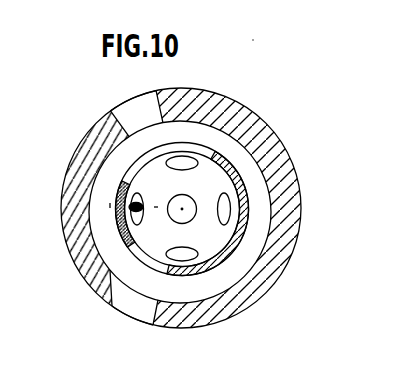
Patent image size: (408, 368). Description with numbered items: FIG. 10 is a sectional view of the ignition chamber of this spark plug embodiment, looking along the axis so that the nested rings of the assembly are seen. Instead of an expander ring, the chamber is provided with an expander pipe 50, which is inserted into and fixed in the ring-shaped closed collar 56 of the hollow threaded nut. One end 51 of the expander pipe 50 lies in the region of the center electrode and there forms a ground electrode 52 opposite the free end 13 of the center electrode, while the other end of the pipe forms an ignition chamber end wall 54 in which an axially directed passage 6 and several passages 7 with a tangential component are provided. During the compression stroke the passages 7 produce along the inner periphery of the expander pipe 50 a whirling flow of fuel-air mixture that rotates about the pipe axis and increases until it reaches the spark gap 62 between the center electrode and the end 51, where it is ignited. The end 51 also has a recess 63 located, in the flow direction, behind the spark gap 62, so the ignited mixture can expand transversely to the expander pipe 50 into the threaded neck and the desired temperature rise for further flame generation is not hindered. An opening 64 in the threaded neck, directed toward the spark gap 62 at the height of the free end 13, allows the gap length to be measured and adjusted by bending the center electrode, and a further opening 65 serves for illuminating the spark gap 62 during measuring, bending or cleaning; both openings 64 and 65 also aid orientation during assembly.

The expander pipe 50 is at (213, 279).
The end of the expander pipe 51 is at (226, 221).
The ground electrode 52 is at (128, 204).
The ignition chamber end wall 54 is at (203, 173).
The ring-shaped closed collar 56 is at (190, 128).
The spark gap 62 is at (130, 209).
The recess 63 is at (128, 172).
The opening 64 is at (113, 117).
The further opening 65 is at (132, 307).
The axially directed passage 6 is at (185, 215).
The passages with tangential component 7 is at (247, 173).
The free end of the center electrode 13 is at (122, 240).